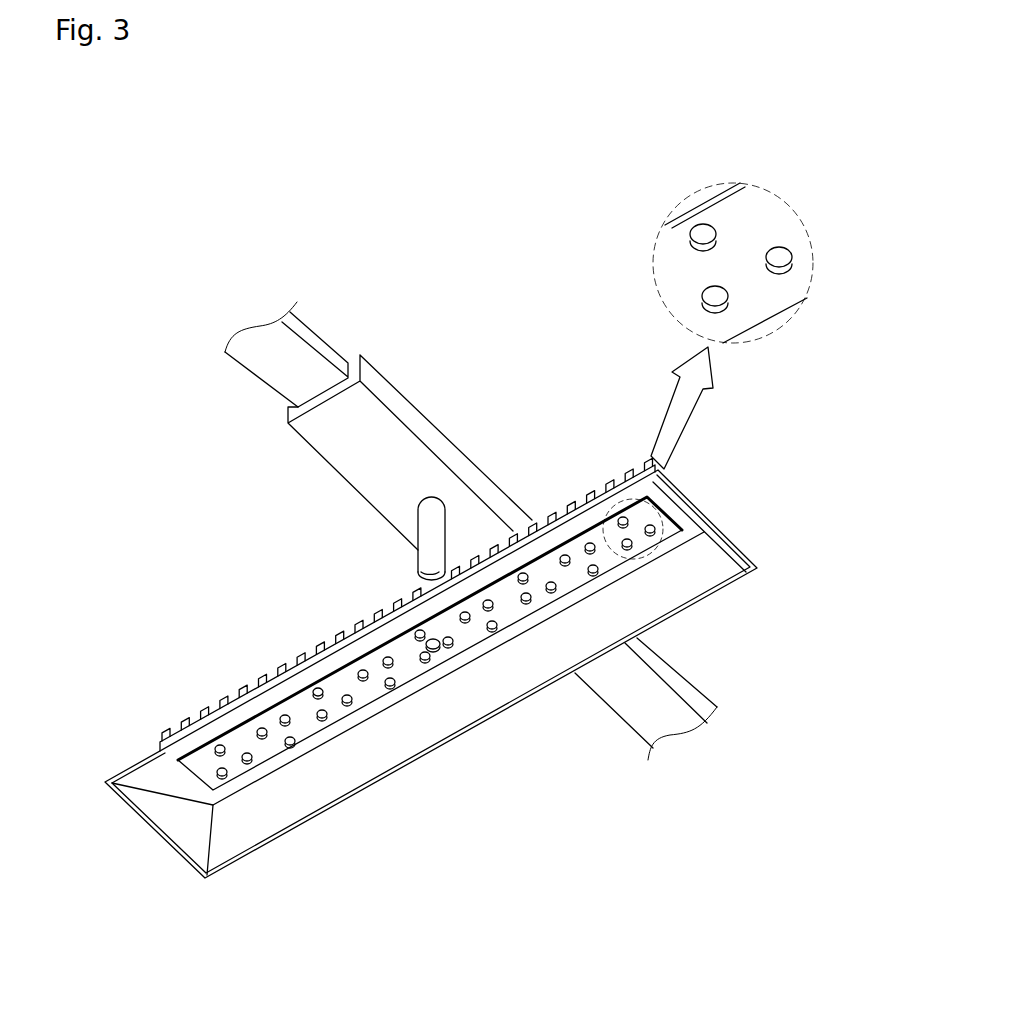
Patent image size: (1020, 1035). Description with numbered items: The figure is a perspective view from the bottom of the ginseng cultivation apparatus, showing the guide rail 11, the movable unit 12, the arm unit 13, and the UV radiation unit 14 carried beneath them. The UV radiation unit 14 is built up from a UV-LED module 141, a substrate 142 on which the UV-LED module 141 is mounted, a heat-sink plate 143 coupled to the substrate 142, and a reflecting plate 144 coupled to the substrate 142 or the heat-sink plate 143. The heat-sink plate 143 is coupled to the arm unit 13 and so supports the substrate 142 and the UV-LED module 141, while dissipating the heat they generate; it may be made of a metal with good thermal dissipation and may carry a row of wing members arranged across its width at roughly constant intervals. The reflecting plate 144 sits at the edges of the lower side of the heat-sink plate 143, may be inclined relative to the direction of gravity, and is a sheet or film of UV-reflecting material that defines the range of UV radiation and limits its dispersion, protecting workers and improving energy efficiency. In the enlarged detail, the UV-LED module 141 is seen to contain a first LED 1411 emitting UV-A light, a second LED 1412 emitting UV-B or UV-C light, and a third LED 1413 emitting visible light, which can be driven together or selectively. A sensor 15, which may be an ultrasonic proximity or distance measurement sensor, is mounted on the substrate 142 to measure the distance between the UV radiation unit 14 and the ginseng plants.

The guide rail 11 is at (272, 366).
The movable unit 12 is at (383, 387).
The arm unit 13 is at (412, 528).
The UV radiation unit 14 is at (131, 760).
The UV-LED module 141 is at (700, 507).
The substrate 142 is at (263, 750).
The heat-sink plate 143 is at (220, 700).
The reflecting plate 144 is at (248, 818).
The sensor 15 is at (433, 653).
The first LED 1411 is at (687, 234).
The second LED 1412 is at (712, 303).
The third LED 1413 is at (785, 255).